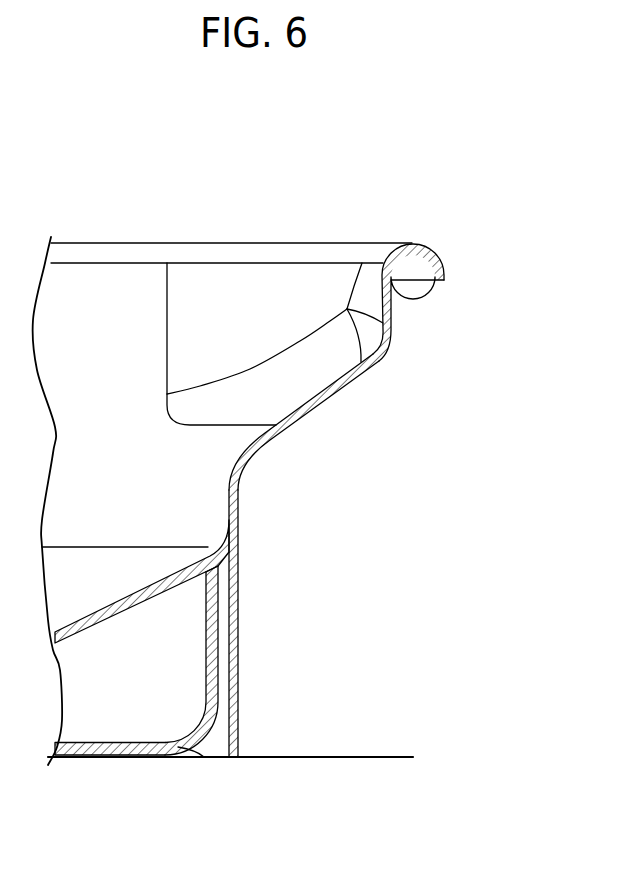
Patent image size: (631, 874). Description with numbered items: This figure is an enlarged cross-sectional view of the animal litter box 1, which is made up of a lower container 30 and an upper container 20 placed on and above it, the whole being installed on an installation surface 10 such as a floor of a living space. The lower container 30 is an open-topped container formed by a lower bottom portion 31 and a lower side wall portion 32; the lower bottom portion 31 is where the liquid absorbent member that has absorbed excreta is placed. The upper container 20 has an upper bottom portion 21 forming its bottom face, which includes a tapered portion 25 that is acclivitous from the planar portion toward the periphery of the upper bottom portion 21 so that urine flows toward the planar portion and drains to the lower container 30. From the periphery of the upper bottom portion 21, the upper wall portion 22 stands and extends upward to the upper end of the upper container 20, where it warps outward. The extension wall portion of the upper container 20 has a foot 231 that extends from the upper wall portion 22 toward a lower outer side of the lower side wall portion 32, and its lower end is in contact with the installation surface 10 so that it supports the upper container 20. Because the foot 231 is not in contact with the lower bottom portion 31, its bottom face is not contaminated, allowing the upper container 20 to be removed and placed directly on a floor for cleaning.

The animal litter box 1 is at (274, 180).
The installation surface 10 is at (358, 800).
The upper container 20 is at (440, 309).
The upper bottom portion 21 is at (86, 572).
The upper wall portion 22 is at (225, 461).
The tapered portion 25 is at (184, 570).
The lower container 30 is at (182, 760).
The lower bottom portion 31 is at (133, 739).
The lower side wall portion 32 is at (214, 640).
The foot 231 is at (238, 697).